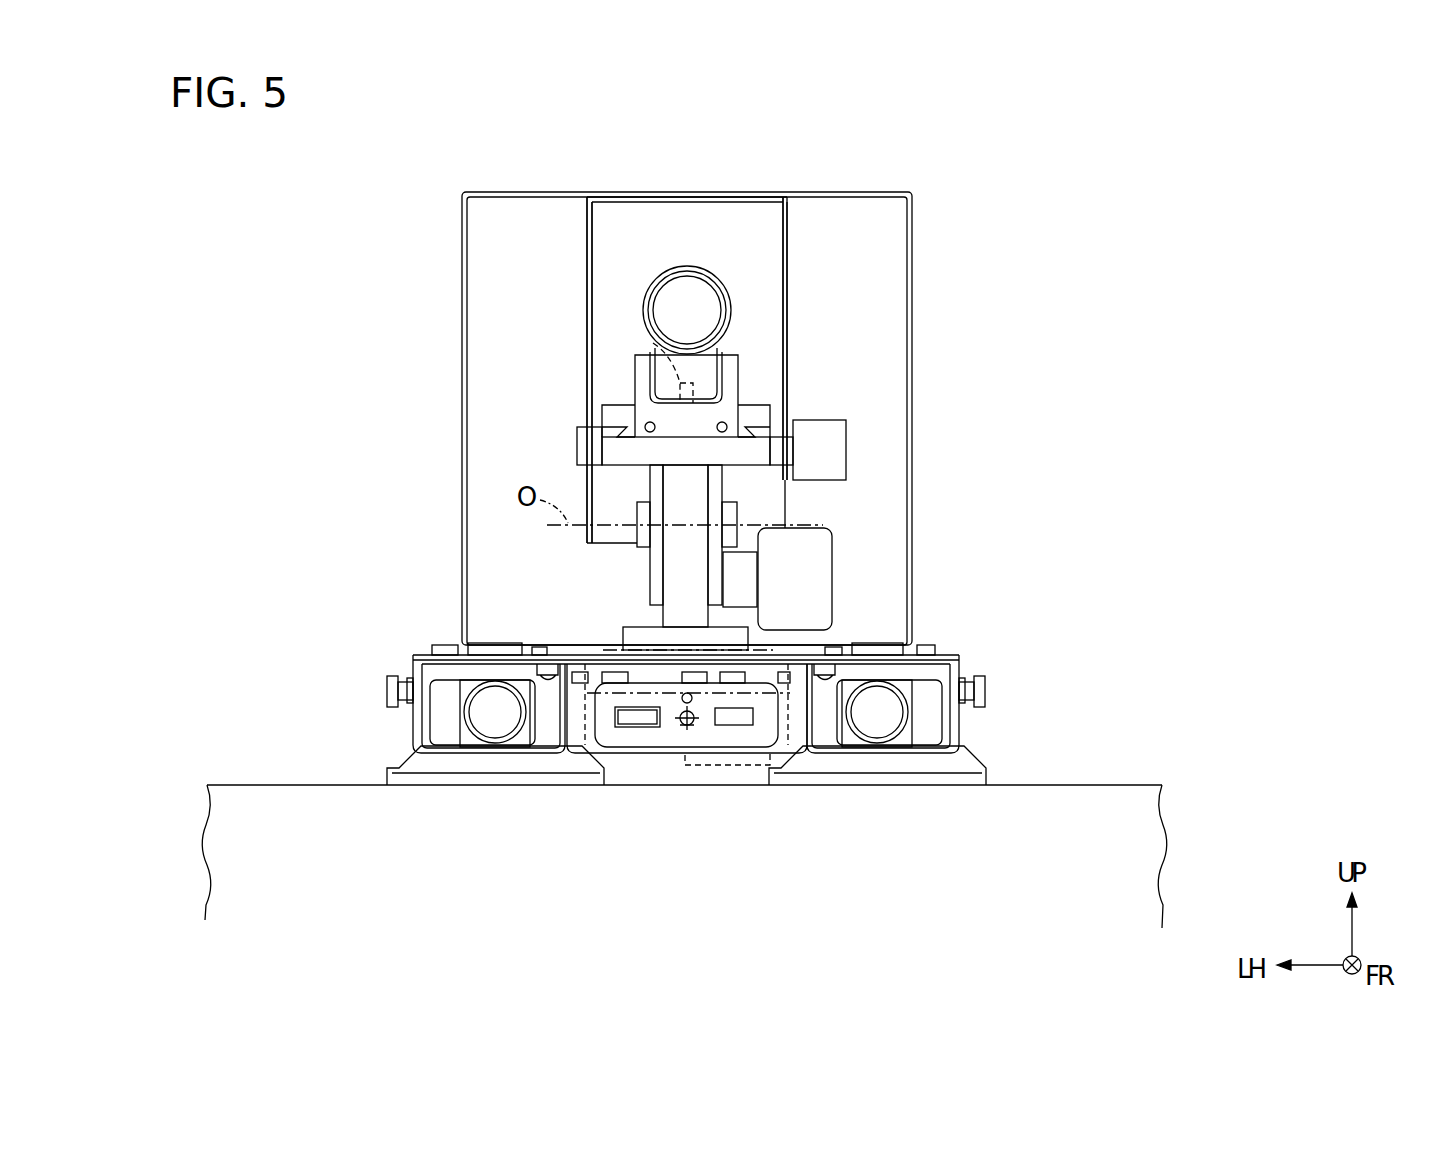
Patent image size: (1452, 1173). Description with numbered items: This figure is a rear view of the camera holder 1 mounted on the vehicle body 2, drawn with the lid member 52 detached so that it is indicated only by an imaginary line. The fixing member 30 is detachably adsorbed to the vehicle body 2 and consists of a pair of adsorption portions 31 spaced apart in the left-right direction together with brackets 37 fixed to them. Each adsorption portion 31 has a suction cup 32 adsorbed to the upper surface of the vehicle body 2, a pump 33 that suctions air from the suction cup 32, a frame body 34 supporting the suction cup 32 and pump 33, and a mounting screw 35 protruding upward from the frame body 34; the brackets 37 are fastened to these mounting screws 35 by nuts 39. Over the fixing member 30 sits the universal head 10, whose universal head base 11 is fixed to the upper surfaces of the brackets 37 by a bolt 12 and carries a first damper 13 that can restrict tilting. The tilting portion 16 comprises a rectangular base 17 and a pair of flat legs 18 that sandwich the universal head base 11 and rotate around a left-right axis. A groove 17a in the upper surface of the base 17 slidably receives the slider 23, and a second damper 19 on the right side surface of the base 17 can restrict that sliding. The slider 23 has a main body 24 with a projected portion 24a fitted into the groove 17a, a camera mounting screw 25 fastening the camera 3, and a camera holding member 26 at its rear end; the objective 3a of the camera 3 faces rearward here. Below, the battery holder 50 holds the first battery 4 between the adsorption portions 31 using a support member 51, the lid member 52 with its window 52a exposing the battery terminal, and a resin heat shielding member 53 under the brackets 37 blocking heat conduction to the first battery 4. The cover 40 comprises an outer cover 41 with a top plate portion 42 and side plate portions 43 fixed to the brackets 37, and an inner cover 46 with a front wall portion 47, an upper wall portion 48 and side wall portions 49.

The camera holder 1 is at (993, 150).
The vehicle body 2 is at (238, 783).
The camera 3 is at (658, 278).
The objective lens 3a is at (693, 292).
The first battery 4 is at (752, 745).
The universal head 10 is at (595, 555).
The universal head base 11 is at (662, 572).
The bolt 12 is at (708, 745).
The first damper 13 is at (827, 552).
The tilting portion 16 is at (652, 485).
The base 17 is at (765, 453).
The groove 17a is at (730, 437).
The legs 18 is at (715, 517).
The second damper 19 is at (842, 463).
The slider 23 is at (633, 382).
The main body 24 is at (612, 408).
The projected portion 24a is at (625, 437).
The camera mounting screw 25 is at (653, 343).
The camera holding member 26 is at (637, 365).
The fixing member 30 is at (570, 652).
The adsorption portions 31 is at (420, 755).
The suction cup 32 is at (515, 778).
The pump 33 is at (490, 735).
The frame body 34 is at (543, 682).
The mounting screw 35 is at (450, 663).
The bracket 37 is at (845, 657).
The nuts 39 is at (493, 642).
The cover 40 is at (920, 112).
The outer cover 41 is at (880, 193).
The top plate portion 42 is at (795, 192).
The side plate portions 43 is at (462, 230).
The inner cover 46 is at (790, 246).
The front wall portion 47 is at (607, 217).
The upper wall portion 48 is at (745, 198).
The side wall portions 49 is at (585, 232).
The battery holder 50 is at (618, 754).
The support member 51 is at (645, 752).
The lid member 52 is at (730, 766).
The window 52a is at (667, 752).
The heat shielding member 53 is at (615, 665).